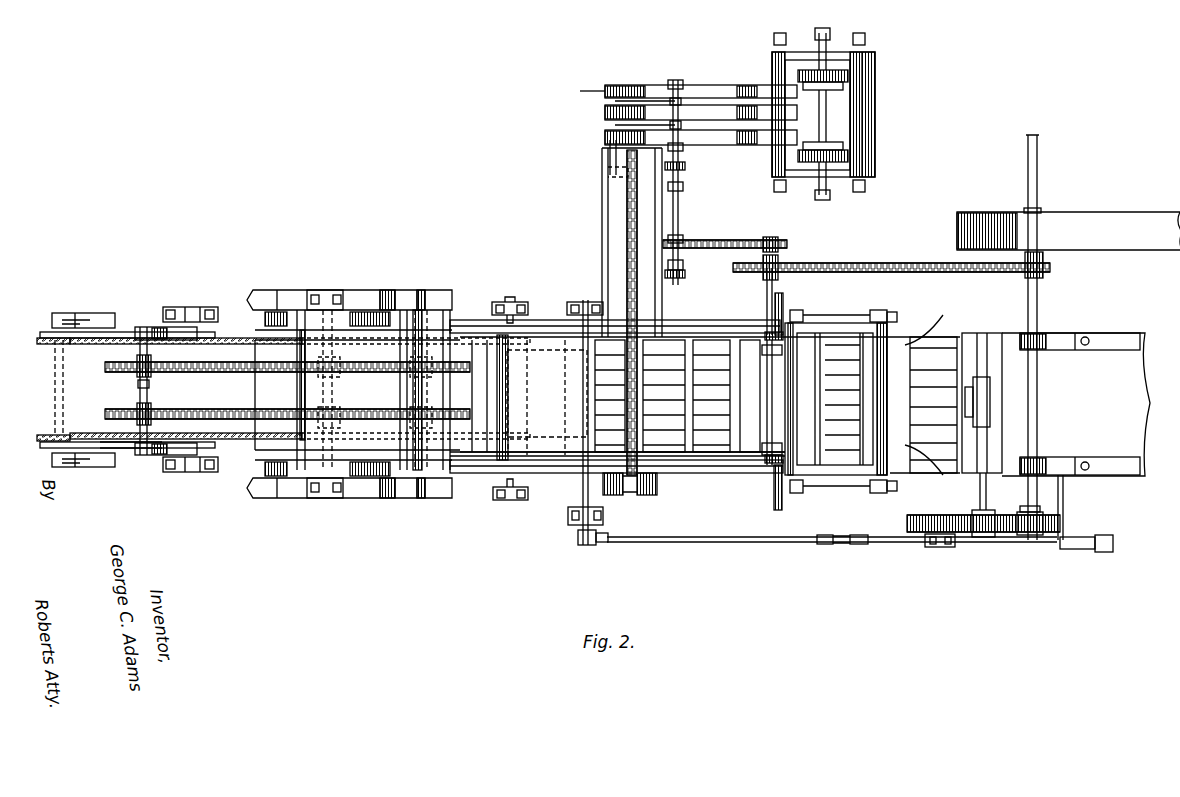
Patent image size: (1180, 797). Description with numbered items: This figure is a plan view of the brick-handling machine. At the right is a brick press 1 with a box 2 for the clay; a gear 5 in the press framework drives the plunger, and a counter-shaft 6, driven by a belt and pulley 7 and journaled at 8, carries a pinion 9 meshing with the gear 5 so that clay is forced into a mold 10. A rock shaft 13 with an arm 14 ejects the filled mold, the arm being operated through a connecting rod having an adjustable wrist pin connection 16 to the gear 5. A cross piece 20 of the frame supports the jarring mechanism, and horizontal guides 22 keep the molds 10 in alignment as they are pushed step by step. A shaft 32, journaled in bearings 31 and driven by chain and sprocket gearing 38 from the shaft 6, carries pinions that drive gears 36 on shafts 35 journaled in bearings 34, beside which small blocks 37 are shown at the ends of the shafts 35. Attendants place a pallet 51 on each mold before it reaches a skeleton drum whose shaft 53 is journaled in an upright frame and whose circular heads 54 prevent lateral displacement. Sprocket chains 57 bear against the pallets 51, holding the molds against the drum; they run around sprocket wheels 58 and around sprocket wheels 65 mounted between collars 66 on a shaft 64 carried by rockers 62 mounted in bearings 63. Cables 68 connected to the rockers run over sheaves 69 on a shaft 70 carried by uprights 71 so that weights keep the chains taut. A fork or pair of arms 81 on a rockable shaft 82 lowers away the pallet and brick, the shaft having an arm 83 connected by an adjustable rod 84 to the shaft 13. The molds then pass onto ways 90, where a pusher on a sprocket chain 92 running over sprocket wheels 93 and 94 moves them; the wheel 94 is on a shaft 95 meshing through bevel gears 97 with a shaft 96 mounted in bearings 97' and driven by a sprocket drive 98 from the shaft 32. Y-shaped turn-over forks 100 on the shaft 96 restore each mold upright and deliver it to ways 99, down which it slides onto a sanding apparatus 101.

The brick press 1 is at (1010, 334).
The box 2 is at (975, 358).
The gear 5 is at (971, 535).
The counter-shaft 6 is at (1035, 405).
The belt and pulley 7 is at (1067, 211).
The journal bearings 8 is at (1048, 334).
The pinion 9 is at (1033, 535).
The mold 10 is at (750, 465).
The rock shaft 13 is at (1065, 505).
The arm 14 is at (1096, 548).
The adjustable wrist pin connection 16 is at (933, 545).
The cross piece 20 is at (856, 543).
The horizontal guides 22 is at (527, 323).
The bearings 31 is at (767, 445).
The shaft 32 is at (778, 285).
The bearings 34 is at (890, 500).
The shafts 35 is at (840, 490).
The gears 36 is at (773, 295).
The bearing block 37 is at (880, 315).
The chain and sprocket gearing 38 is at (862, 258).
The pallet 51 is at (495, 450).
The shaft of skeleton drum 53 is at (328, 498).
The circular heads 54 is at (280, 315).
The sprocket chains 57 is at (230, 362).
The sprocket wheels 58 is at (430, 348).
The rockers 62 is at (152, 324).
The bearings 63 is at (195, 480).
The shaft 64 is at (147, 382).
The sprocket wheels 65 is at (138, 402).
The collars 66 is at (137, 360).
The cables 68 is at (127, 450).
The sheaves 69 is at (52, 330).
The shaft 70 is at (71, 387).
The uprights 71 is at (90, 313).
The fork or pair of arms 81 is at (547, 397).
The rockable shaft 82 is at (583, 495).
The arm 83 is at (585, 544).
The adjustable rod 84 is at (756, 540).
The ways 90 is at (608, 183).
The sprocket chain 92 is at (627, 262).
The sprocket wheel 93 is at (630, 500).
The sprocket wheel 94 is at (625, 155).
The shaft 95 is at (618, 170).
The shaft 96 is at (679, 210).
The bevel gears 97 is at (694, 229).
The bearings 97' is at (707, 159).
The sprocket drive 98 is at (743, 238).
The ways 99 is at (712, 90).
The turn-over forks 100 is at (610, 102).
The sanding apparatus 101 is at (873, 120).